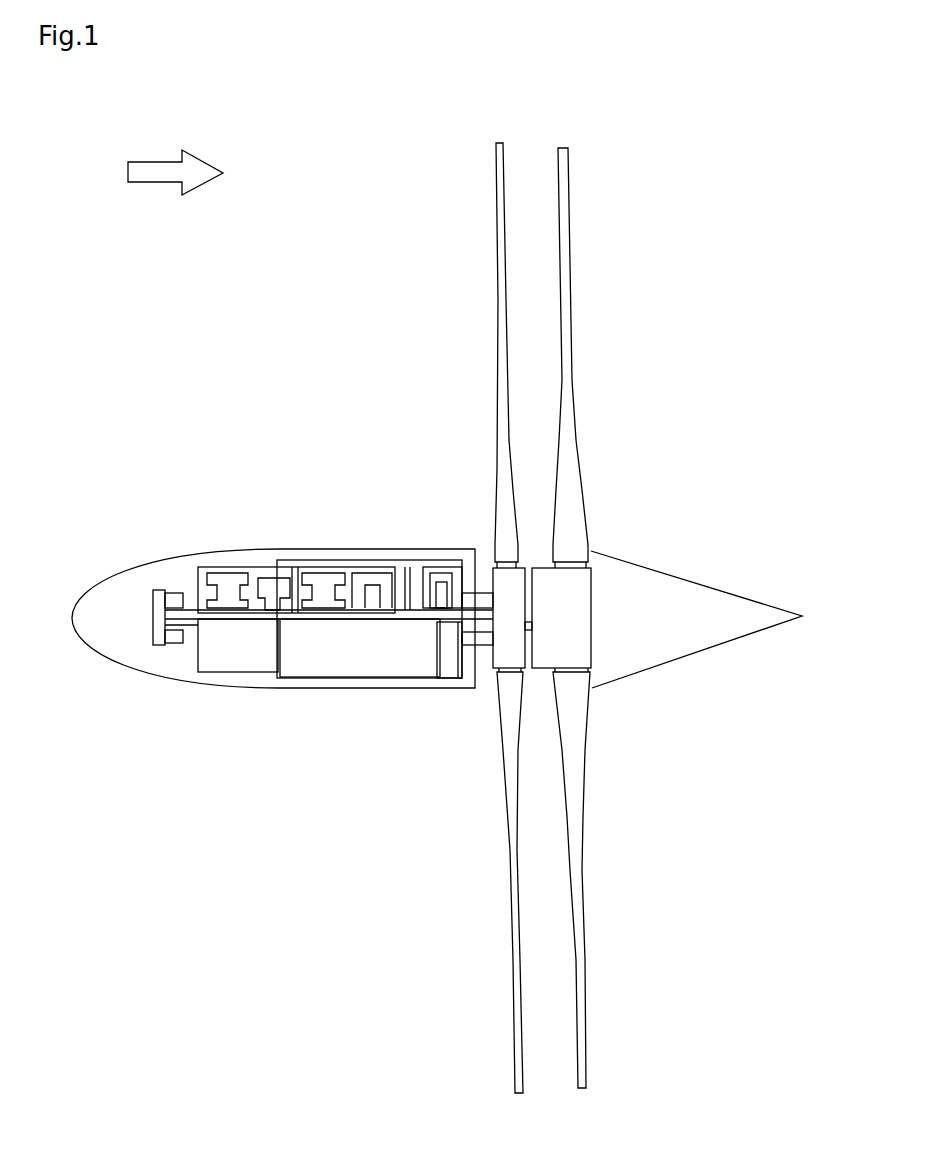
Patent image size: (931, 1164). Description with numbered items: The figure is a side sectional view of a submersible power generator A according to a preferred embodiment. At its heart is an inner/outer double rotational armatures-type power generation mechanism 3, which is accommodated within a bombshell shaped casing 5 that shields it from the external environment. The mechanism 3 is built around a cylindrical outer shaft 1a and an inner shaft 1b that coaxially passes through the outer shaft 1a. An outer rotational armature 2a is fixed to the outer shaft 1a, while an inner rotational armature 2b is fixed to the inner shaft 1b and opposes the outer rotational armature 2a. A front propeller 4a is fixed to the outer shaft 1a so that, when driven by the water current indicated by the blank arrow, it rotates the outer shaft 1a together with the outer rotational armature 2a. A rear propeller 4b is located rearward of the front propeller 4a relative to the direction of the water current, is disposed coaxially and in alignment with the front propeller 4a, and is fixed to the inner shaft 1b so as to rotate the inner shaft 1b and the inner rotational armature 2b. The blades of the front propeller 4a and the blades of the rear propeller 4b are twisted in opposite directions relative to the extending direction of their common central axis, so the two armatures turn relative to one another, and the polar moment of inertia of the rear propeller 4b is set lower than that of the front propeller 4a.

The outer shaft 1a is at (428, 571).
The inner shaft 1b is at (437, 615).
The outer rotational armature 2a is at (344, 578).
The inner rotational armature 2b is at (337, 607).
The inner/outer double rotational armatures-type power generation mechanism 3 is at (373, 657).
The front propeller 4a is at (495, 229).
The rear propeller 4b is at (570, 220).
The bombshell shaped casing 5 is at (113, 573).
The submersible power generator A is at (720, 497).